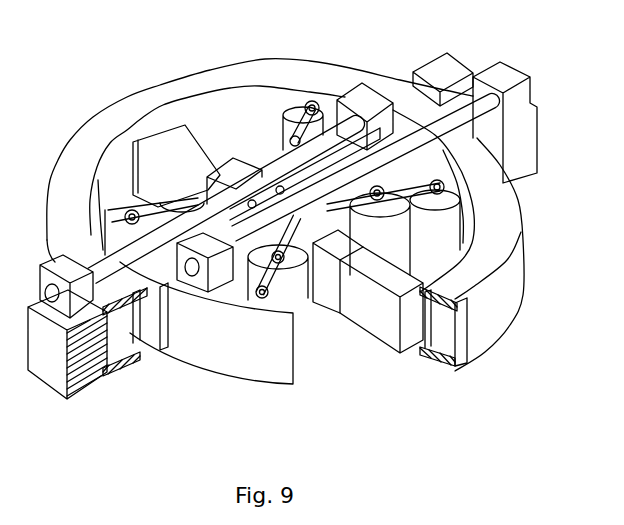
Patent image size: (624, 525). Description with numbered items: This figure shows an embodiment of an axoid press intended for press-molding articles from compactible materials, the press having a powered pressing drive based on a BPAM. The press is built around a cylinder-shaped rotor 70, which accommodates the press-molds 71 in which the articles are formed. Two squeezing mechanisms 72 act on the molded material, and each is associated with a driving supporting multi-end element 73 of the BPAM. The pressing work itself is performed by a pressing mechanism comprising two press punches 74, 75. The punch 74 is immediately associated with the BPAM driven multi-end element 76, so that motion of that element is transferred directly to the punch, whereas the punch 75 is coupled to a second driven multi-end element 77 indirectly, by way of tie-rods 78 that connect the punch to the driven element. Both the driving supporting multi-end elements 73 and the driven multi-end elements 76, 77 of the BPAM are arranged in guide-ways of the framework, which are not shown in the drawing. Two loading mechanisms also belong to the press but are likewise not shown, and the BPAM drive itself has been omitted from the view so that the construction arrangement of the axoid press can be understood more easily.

The cylinder-shaped rotor 70 is at (489, 307).
The press-molds 71 is at (123, 329).
The squeezing mechanisms 72 is at (153, 147).
The driving supporting multi-end elements 73 is at (227, 173).
The press punch 74 is at (140, 339).
The press punch 75 is at (100, 372).
The driven multi-end element 76 is at (230, 303).
The driven multi-end element 77 is at (323, 110).
The tie-rods 78 is at (257, 173).